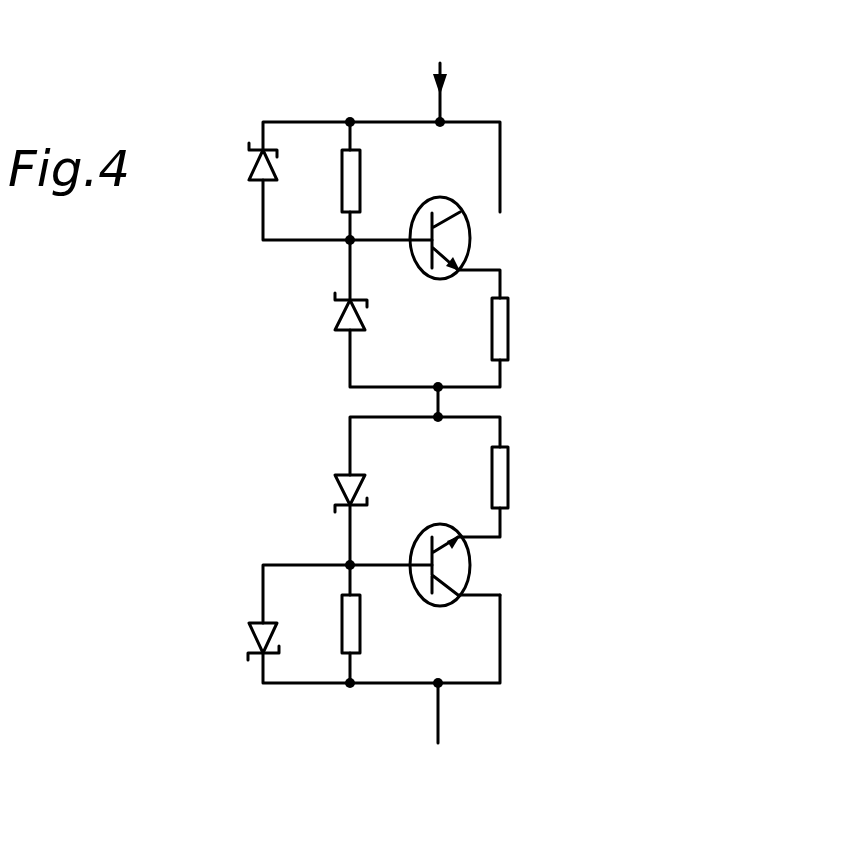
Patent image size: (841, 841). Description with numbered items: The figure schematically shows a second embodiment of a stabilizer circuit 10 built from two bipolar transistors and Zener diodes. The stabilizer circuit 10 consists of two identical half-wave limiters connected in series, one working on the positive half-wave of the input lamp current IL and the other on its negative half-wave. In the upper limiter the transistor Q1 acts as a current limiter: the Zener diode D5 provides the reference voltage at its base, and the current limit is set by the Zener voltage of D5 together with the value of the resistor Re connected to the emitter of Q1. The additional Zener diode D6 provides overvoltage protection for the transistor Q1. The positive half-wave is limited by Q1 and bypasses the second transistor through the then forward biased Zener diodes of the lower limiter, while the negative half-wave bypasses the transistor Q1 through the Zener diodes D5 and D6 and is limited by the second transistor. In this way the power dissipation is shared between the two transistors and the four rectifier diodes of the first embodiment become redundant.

The stabilizer circuit 10 is at (620, 303).
The lamp current IL is at (462, 91).
The bipolar NPN transistor Q1 is at (469, 247).
The resistor Re is at (527, 329).
The Zener diode D5 is at (316, 316).
The Zener diode D6 is at (227, 163).